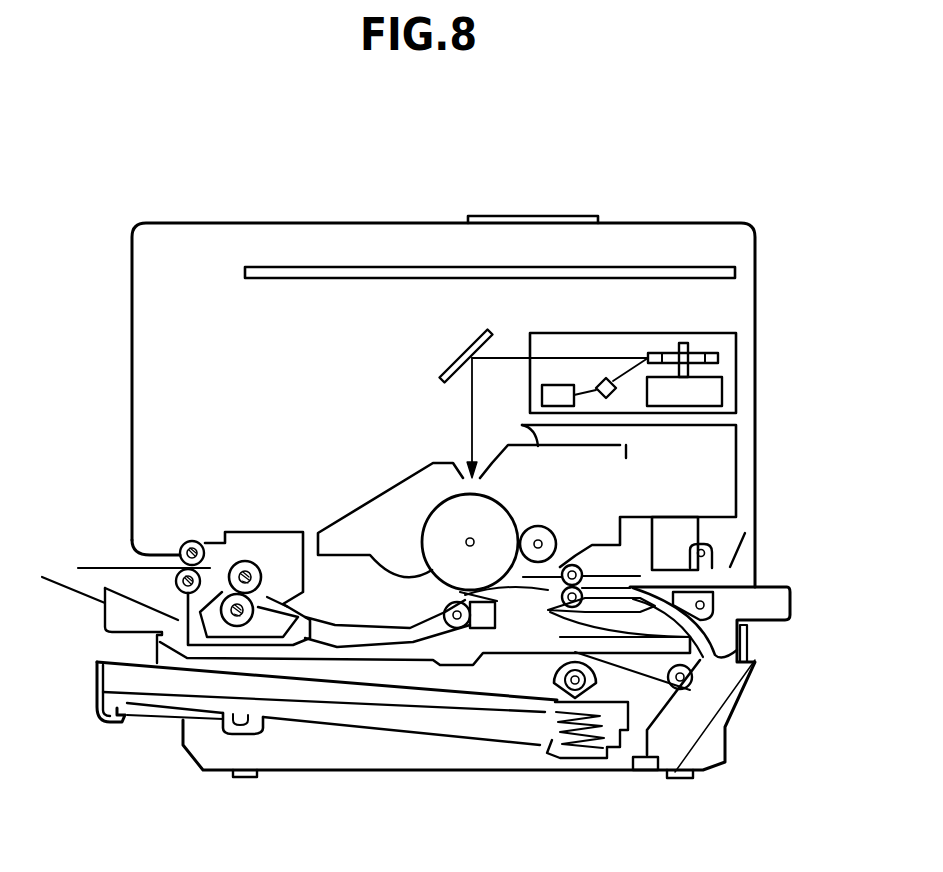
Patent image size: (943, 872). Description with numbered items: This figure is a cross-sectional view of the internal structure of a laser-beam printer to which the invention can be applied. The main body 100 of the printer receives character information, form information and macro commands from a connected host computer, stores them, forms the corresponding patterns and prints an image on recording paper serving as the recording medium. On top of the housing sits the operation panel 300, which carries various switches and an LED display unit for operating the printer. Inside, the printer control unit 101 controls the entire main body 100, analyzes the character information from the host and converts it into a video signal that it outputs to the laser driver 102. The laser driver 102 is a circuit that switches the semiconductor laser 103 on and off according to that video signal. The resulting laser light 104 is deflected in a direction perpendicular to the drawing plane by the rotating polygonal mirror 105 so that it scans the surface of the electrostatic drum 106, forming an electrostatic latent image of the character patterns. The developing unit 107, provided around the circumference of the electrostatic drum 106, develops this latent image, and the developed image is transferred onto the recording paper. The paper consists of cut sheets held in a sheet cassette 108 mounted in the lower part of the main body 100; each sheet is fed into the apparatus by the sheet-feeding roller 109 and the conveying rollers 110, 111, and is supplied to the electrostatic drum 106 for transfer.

The main body 100 is at (705, 222).
The operation panel 300 is at (556, 215).
The printer control unit 101 is at (737, 274).
The laser driver 102 is at (540, 395).
The semiconductor laser 103 is at (612, 394).
The laser light 104 is at (627, 357).
The rotating polygonal mirror 105 is at (718, 357).
The electrostatic drum 106 is at (440, 512).
The developing unit 107 is at (362, 530).
The sheet feed cassette 108 is at (96, 690).
The sheet-feeding roller 109 is at (558, 684).
The conveying roller 110 is at (690, 686).
The conveying roller 111 is at (705, 638).